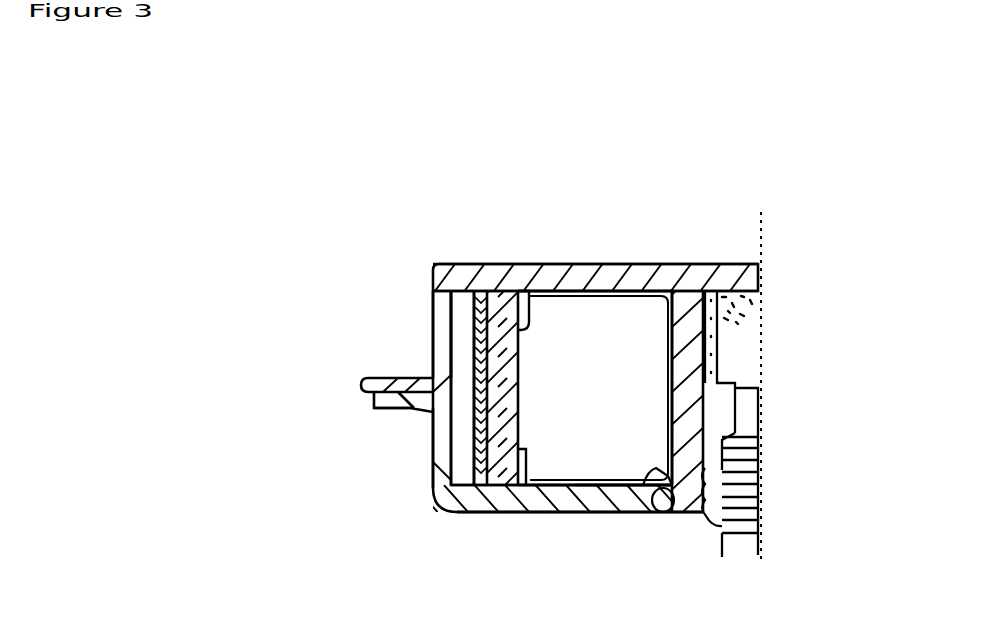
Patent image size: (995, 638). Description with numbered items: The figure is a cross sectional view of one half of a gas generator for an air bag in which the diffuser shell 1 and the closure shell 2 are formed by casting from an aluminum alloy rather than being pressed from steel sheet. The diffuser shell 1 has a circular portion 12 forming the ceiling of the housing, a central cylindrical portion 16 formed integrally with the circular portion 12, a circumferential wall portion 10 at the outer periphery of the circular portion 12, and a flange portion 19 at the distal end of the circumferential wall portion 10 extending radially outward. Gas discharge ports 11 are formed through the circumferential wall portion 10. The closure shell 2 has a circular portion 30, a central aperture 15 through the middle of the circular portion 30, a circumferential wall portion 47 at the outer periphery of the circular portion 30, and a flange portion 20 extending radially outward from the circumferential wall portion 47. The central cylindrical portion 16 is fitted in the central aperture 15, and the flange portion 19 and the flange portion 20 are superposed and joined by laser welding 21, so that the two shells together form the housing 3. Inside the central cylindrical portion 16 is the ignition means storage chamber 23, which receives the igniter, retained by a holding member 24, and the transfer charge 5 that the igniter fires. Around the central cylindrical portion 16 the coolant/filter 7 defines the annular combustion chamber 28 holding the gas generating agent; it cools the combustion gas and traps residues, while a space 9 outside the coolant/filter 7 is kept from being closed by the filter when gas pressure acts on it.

The diffuser shell 1 is at (447, 254).
The closure shell 2 is at (574, 518).
The housing 3 is at (592, 570).
The transfer charge 5 is at (727, 291).
The coolant/filter 7 is at (458, 456).
The space 9 is at (465, 300).
The circumferential wall portion 10 is at (432, 355).
The gas discharge ports 11 is at (432, 325).
The circular portion 12 is at (489, 291).
The central aperture 15 is at (670, 513).
The central cylindrical portion 16 is at (657, 513).
The flange portion 19 is at (367, 378).
The flange portion 20 is at (380, 408).
The laser welding 21 is at (374, 397).
The ignition means storage chamber 23 is at (752, 305).
The holding member 24 is at (723, 535).
The combustion chamber 28 is at (622, 318).
The circular portion 30 is at (492, 513).
The circumferential wall portion 47 is at (432, 447).